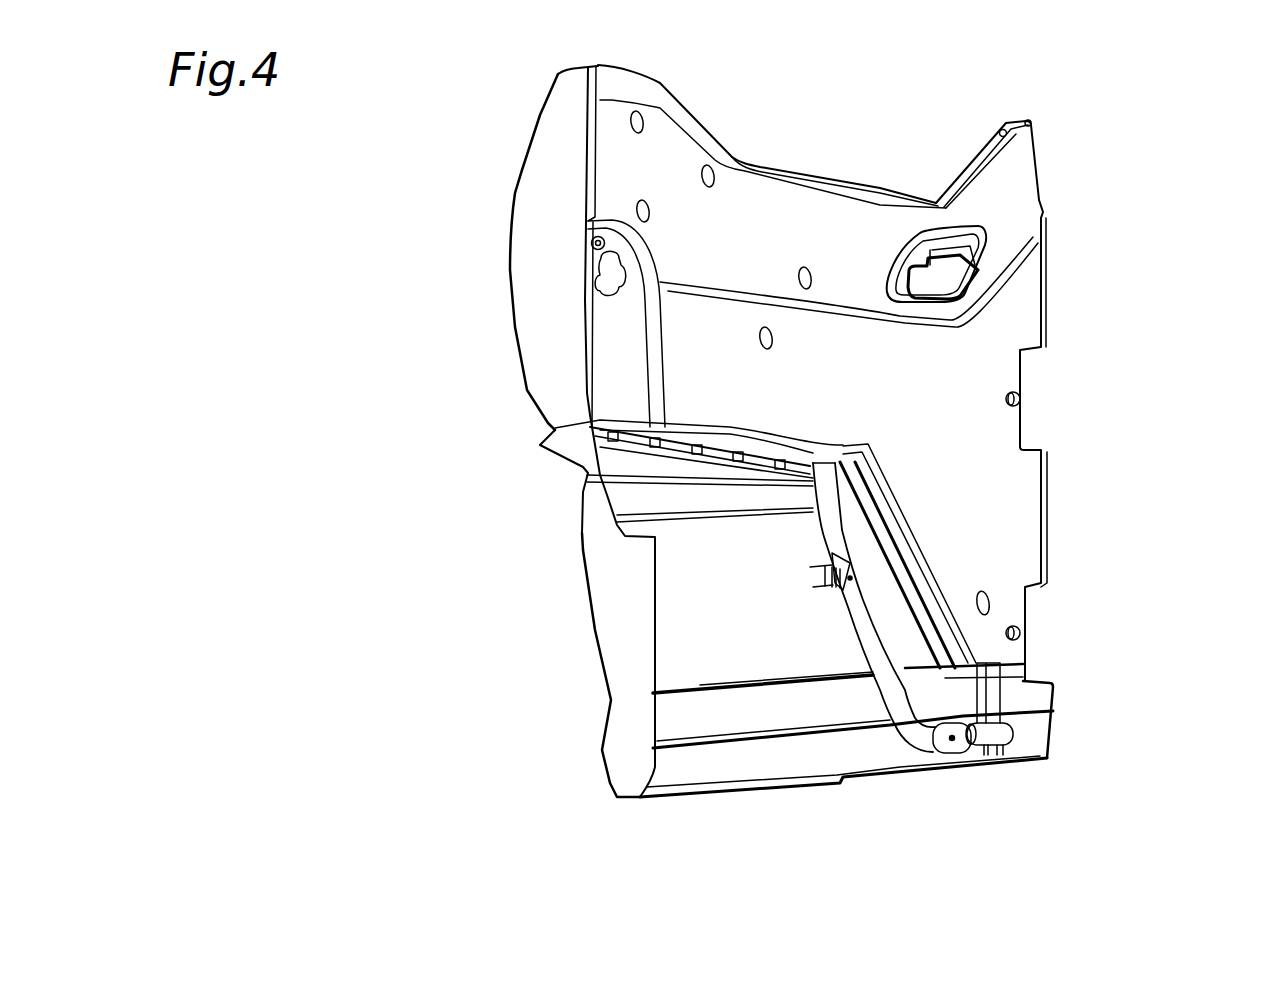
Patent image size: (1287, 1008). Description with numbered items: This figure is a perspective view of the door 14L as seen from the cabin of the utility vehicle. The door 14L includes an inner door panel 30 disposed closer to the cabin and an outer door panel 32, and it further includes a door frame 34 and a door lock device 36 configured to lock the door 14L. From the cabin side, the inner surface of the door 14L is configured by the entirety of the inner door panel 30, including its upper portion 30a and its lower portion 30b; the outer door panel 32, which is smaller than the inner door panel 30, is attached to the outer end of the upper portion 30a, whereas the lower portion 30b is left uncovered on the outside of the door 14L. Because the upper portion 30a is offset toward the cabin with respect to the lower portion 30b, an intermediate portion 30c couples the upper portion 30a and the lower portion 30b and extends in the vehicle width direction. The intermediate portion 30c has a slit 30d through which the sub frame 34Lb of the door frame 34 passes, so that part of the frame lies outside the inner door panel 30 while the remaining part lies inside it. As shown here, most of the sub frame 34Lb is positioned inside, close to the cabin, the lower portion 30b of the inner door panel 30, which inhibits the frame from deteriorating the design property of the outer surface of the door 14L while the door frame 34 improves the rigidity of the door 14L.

The door 14L is at (1160, 184).
The inner door panel 30 is at (617, 617).
The upper portion 30a is at (895, 398).
The lower portion 30b is at (765, 615).
The intermediate portion 30c is at (727, 440).
The slit 30d is at (895, 542).
The outer door panel 32 is at (538, 197).
The door frame 34 is at (900, 732).
The sub frame 34Lb is at (894, 598).
The door lock device 36 is at (950, 279).